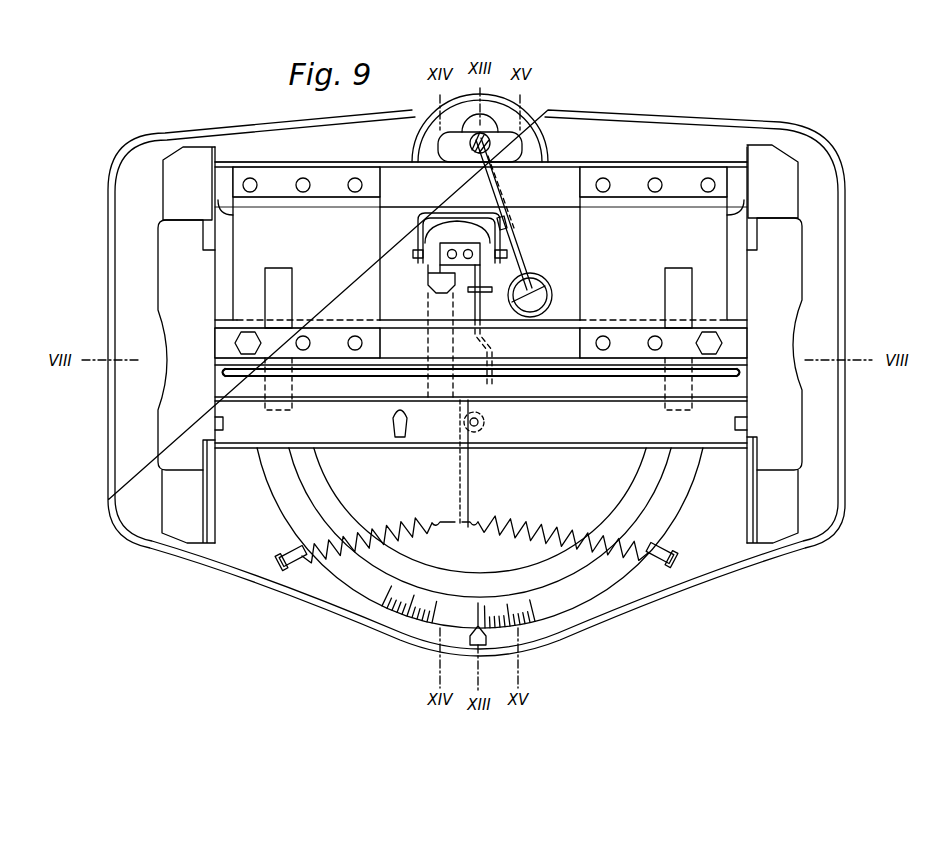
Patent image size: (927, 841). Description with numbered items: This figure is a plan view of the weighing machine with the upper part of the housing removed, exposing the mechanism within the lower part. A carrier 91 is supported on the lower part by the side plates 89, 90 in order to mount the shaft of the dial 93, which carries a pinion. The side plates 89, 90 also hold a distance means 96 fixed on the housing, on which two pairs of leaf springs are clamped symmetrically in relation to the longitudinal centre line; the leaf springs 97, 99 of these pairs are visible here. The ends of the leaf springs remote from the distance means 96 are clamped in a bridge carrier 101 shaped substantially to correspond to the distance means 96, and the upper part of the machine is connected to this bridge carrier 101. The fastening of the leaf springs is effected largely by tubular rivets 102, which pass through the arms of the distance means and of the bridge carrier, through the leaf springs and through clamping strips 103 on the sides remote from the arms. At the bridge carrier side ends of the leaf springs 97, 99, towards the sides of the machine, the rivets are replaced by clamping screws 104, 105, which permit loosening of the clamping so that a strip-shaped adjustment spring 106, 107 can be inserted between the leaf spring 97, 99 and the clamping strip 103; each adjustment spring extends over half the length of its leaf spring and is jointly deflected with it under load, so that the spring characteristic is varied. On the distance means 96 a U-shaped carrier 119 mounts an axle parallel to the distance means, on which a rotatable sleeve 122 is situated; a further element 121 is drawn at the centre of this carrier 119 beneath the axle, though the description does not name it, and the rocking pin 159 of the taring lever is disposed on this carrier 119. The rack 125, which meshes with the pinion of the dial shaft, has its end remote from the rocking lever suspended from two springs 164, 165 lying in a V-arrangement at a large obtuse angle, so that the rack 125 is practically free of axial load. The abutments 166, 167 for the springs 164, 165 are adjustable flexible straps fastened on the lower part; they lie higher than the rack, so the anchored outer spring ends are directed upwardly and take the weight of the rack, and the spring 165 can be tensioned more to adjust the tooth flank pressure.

The side plate 89 is at (748, 237).
The side plate 90 is at (212, 182).
The carrier 91 is at (303, 427).
The dial 93 is at (430, 628).
The distance means 96 is at (392, 200).
The leaf spring 97 is at (718, 303).
The leaf spring 99 is at (255, 247).
The bridge carrier 101 is at (395, 383).
The tubular rivets 102 is at (255, 182).
The clamping strips 103 is at (235, 187).
The clamping screw 104 is at (720, 341).
The clamping screw 105 is at (243, 343).
The adjustment spring 106 is at (282, 287).
The adjustment spring 107 is at (678, 284).
The carrier 119 is at (440, 212).
The clamp block 121 is at (432, 268).
The rotatable sleeve 122 is at (524, 272).
The rack 125 is at (438, 486).
The rocking pin 159 is at (512, 223).
The spring 164 is at (338, 568).
The spring 165 is at (618, 568).
The abutment 166 is at (672, 562).
The abutment 167 is at (284, 574).